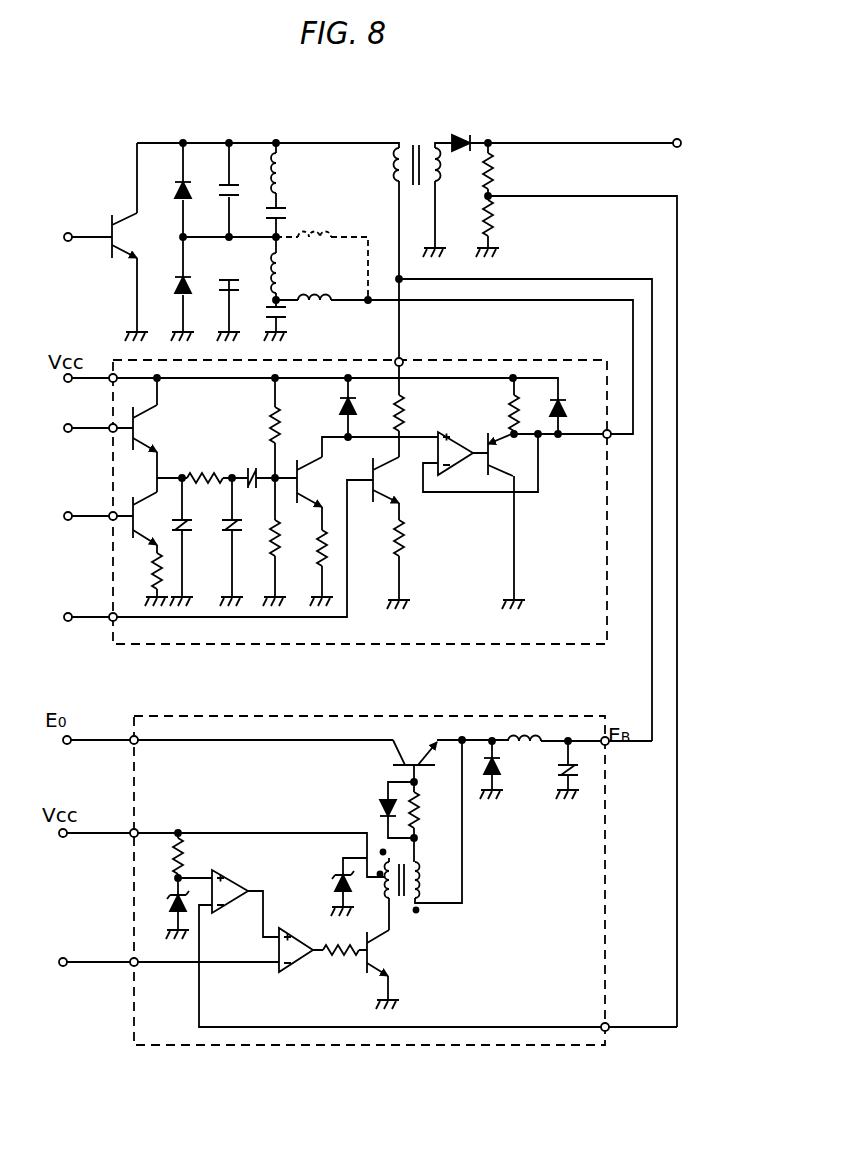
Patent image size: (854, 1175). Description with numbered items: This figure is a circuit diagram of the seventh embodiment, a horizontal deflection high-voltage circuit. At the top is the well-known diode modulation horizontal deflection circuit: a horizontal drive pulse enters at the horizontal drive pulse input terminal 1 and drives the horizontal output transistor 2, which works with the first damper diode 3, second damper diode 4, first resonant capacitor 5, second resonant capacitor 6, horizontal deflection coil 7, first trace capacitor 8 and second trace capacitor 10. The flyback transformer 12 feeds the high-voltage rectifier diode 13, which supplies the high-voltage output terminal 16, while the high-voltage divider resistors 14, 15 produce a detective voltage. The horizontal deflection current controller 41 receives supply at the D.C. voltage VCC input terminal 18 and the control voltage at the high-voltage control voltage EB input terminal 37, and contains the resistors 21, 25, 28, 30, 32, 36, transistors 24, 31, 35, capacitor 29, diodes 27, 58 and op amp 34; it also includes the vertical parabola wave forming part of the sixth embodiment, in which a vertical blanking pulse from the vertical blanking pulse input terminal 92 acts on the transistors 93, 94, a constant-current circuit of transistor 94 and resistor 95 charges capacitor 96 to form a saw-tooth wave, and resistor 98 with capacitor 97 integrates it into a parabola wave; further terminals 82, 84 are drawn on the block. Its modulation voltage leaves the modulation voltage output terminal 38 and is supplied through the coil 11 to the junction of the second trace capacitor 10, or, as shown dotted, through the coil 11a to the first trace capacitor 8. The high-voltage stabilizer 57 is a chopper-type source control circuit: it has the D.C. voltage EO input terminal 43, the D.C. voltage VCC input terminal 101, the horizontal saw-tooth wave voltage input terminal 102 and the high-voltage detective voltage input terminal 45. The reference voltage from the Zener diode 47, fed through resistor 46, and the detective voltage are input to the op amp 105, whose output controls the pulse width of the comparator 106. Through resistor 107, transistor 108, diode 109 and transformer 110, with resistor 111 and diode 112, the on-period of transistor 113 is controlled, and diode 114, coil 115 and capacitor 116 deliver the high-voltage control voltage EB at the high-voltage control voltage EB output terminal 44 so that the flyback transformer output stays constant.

The horizontal drive pulse input terminal 1 is at (70, 244).
The horizontal output transistor 2 is at (112, 220).
The first damper diode 3 is at (180, 198).
The second damper diode 4 is at (180, 292).
The first resonant capacitor 5 is at (225, 200).
The second resonant capacitor 6 is at (225, 292).
The horizontal deflection coil 7 is at (284, 176).
The first trace capacitor 8 is at (288, 212).
The second trace capacitor 10 is at (287, 322).
The coil 11 is at (325, 297).
The coil 11a is at (340, 236).
The flyback transformer 12 is at (414, 146).
The high-voltage rectifier diode 13 is at (458, 138).
The high-voltage divider resistor 14 is at (494, 166).
The high-voltage divider resistor 15 is at (494, 220).
The high-voltage output terminal 16 is at (676, 138).
The D.C. voltage VCC input terminal 18 is at (110, 384).
The resistor 21 is at (394, 406).
The transistor 24 is at (400, 496).
The resistor 25 is at (405, 548).
The diode 27 is at (344, 408).
The resistor 28 is at (282, 420).
The capacitor 29 is at (250, 466).
The resistor 30 is at (270, 540).
The transistor 31 is at (310, 482).
The resistor 32 is at (318, 540).
The op amp 34 is at (446, 432).
The transistor 35 is at (526, 466).
The resistor 36 is at (510, 404).
The high-voltage control voltage EB input terminal 37 is at (402, 357).
The modulation voltage output terminal 38 is at (611, 438).
The horizontal deflection current controller 41 is at (242, 646).
The D.C. voltage EO input terminal 43 is at (129, 735).
The high-voltage control voltage EB output terminal 44 is at (610, 748).
The high-voltage detective voltage input terminal 45 is at (611, 1021).
The resistor 46 is at (185, 854).
The Zener diode 47 is at (172, 894).
The high-voltage stabilizer 57 is at (352, 715).
The diode 58 is at (566, 408).
The terminal 82 is at (110, 522).
The terminal 84 is at (110, 623).
The vertical blanking pulse input terminal 92 is at (110, 434).
The transistor 93 is at (152, 424).
The transistor 94 is at (148, 496).
The resistor 95 is at (153, 568).
The capacitor 96 is at (185, 518).
The capacitor 97 is at (226, 534).
The resistor 98 is at (203, 473).
The D.C. voltage VCC input terminal 101 is at (129, 828).
The horizontal saw-tooth wave voltage input terminal 102 is at (129, 958).
The op amp 105 is at (243, 883).
The comparator 106 is at (293, 968).
The resistor 107 is at (340, 960).
The transistor 108 is at (392, 958).
The diode 109 is at (337, 878).
The transformer 110 is at (402, 905).
The resistor 111 is at (420, 806).
The diode 112 is at (378, 806).
The transistor 113 is at (393, 750).
The diode 114 is at (501, 766).
The coil 115 is at (530, 732).
The capacitor 116 is at (560, 782).